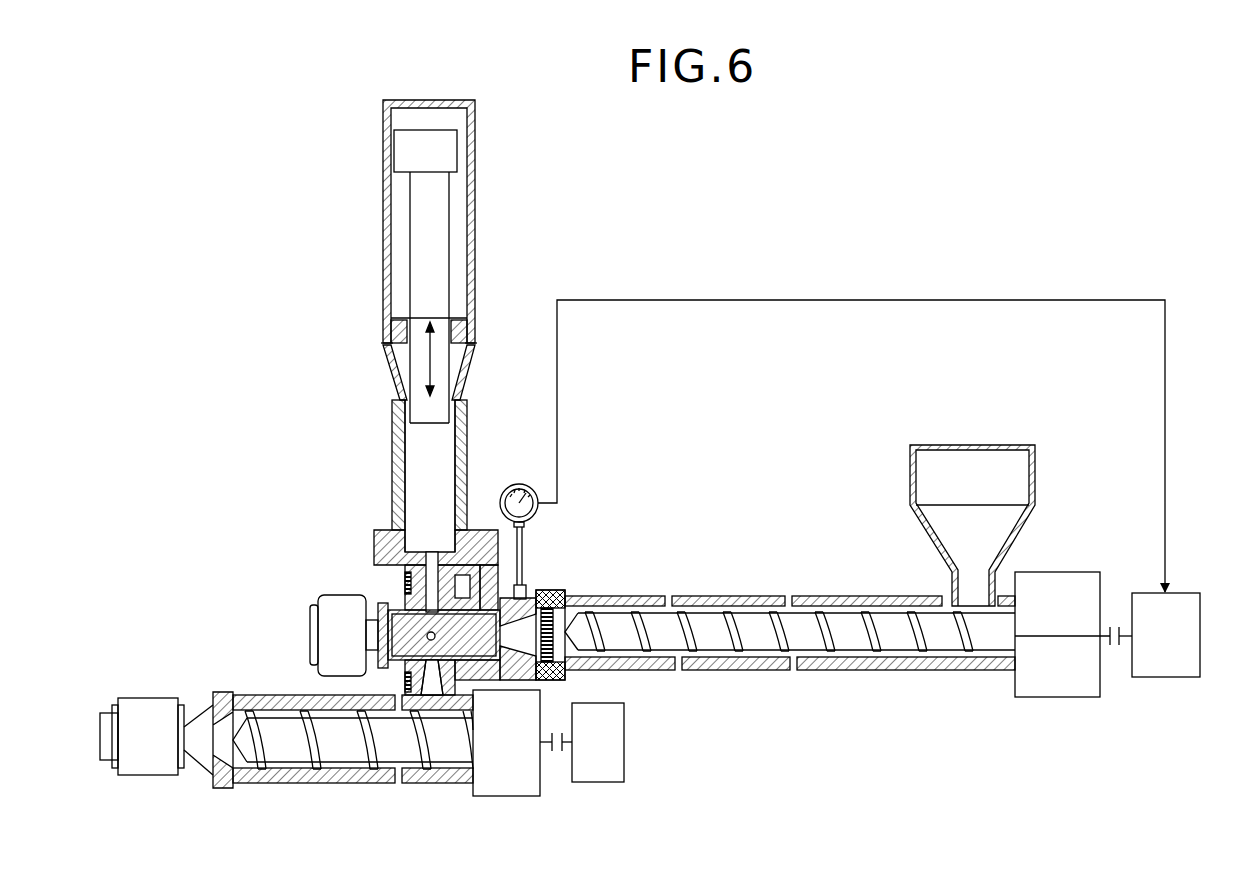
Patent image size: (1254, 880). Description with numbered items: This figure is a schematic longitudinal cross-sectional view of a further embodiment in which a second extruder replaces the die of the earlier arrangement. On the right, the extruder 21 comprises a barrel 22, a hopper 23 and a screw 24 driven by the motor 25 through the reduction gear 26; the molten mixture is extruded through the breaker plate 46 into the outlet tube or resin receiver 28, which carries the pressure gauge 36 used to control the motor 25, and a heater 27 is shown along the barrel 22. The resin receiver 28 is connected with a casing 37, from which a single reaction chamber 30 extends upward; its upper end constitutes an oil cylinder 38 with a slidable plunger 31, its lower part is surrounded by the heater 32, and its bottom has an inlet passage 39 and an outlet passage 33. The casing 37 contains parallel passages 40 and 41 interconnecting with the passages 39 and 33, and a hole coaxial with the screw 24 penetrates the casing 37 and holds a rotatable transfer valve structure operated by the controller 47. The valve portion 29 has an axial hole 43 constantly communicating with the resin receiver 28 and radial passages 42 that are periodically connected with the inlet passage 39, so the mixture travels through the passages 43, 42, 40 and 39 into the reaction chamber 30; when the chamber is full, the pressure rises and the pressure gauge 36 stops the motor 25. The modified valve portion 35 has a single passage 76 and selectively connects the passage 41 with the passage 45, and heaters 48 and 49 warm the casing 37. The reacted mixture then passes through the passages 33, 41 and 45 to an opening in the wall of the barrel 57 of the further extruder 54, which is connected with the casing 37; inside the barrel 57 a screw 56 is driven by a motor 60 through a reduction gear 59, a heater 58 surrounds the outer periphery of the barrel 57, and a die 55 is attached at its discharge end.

The extruder 21 is at (763, 676).
The barrel 22 is at (804, 600).
The hopper 23 is at (970, 458).
The screw 24 is at (737, 623).
The motor 25 is at (1198, 640).
The reduction gear 26 is at (1056, 580).
The barrel heating zone 27 is at (848, 599).
The outlet tube 28 is at (522, 662).
The valve portion 29 is at (482, 662).
The reaction chamber 30 is at (399, 456).
The plunger 31 is at (412, 236).
The heater 32 is at (394, 484).
The outlet passage 33 is at (435, 553).
The valve portion 35 is at (410, 632).
The pressure gauge 36 is at (505, 486).
The casing 37 is at (410, 582).
The oil cylinder 38 is at (470, 226).
The inlet passage 39 is at (488, 545).
The passage 40 is at (482, 578).
The passage 41 is at (412, 560).
The radial passage 42 is at (527, 584).
The axial hole 43 is at (488, 638).
The passage 45 is at (432, 693).
The breaker plate 46 is at (565, 676).
The controller 47 is at (328, 612).
The heater 48 is at (405, 590).
The heater 49 is at (405, 674).
The further extruder 54 is at (383, 793).
The die 55 is at (145, 763).
The screw 56 is at (335, 755).
The barrel 57 is at (434, 781).
The heater 58 is at (397, 783).
The reduction gear 59 is at (523, 785).
The motor 60 is at (624, 742).
The passage 76 is at (388, 642).